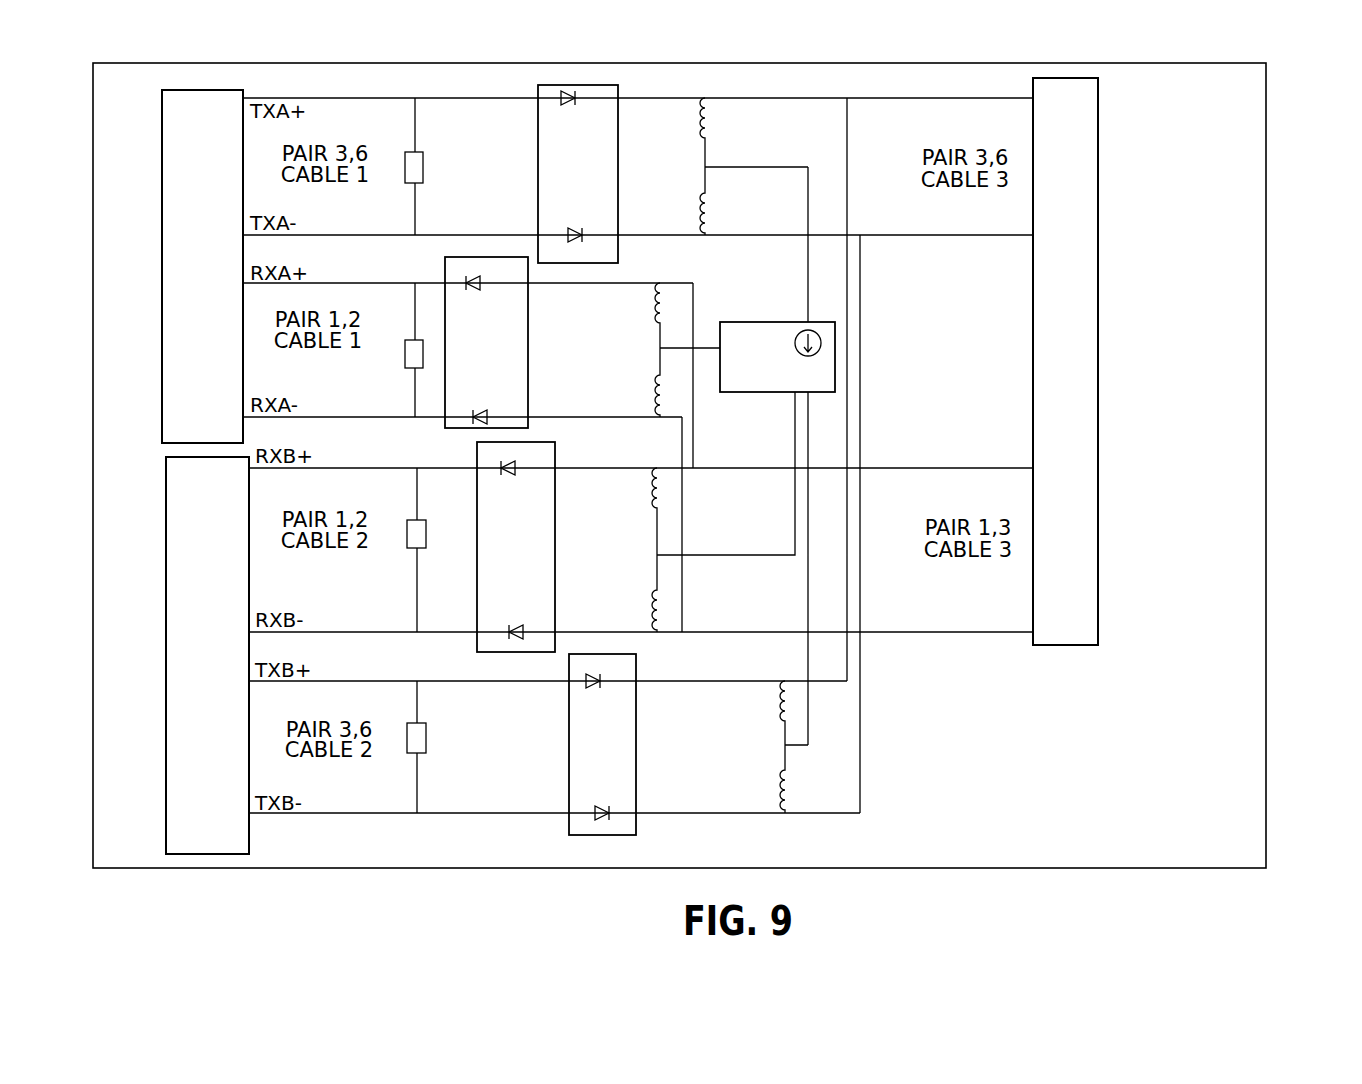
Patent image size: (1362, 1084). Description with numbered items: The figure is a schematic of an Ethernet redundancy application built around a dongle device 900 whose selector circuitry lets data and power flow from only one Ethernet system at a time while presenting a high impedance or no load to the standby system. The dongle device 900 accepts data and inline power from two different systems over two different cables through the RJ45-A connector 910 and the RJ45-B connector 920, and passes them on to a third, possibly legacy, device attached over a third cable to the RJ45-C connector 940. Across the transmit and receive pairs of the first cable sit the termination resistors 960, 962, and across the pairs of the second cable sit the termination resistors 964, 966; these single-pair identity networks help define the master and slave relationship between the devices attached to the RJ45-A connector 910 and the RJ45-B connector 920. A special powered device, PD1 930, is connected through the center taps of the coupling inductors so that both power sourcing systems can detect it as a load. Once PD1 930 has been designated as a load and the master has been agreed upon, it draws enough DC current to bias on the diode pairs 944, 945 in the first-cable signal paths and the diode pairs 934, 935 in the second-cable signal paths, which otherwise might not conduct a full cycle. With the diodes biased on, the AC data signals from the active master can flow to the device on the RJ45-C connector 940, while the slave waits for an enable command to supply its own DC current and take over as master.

The dongle device 900 is at (1266, 127).
The RJ45-A connector 910 is at (162, 184).
The RJ45-B connector 920 is at (166, 541).
The PD1 device 930 is at (763, 322).
The diode pair 934 is at (555, 533).
The diode pair 935 is at (636, 740).
The RJ45-C connector 940 is at (1098, 366).
The diode pair 944 is at (618, 155).
The diode pair 945 is at (528, 340).
The termination resistor 960 is at (423, 167).
The termination resistor 962 is at (405, 363).
The termination resistor 964 is at (425, 548).
The termination resistor 966 is at (426, 738).